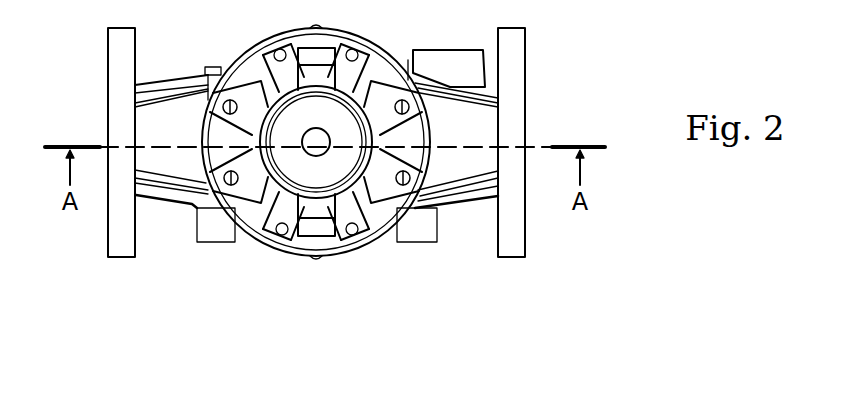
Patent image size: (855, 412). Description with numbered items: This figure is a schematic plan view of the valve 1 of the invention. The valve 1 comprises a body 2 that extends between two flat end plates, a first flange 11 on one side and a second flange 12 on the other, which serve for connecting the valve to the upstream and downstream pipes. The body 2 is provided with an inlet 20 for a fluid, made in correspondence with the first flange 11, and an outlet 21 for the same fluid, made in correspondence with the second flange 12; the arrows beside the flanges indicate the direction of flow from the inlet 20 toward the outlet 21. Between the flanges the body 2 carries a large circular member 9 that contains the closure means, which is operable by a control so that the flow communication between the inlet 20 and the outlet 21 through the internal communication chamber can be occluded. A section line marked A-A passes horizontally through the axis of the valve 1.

The valve 1 is at (28, 300).
The body 2 is at (165, 200).
The circular bearing unit 9 is at (383, 208).
The first flange 11 is at (122, 241).
The second flange 12 is at (510, 240).
The inlet 20 is at (98, 118).
The outlet 21 is at (525, 128).